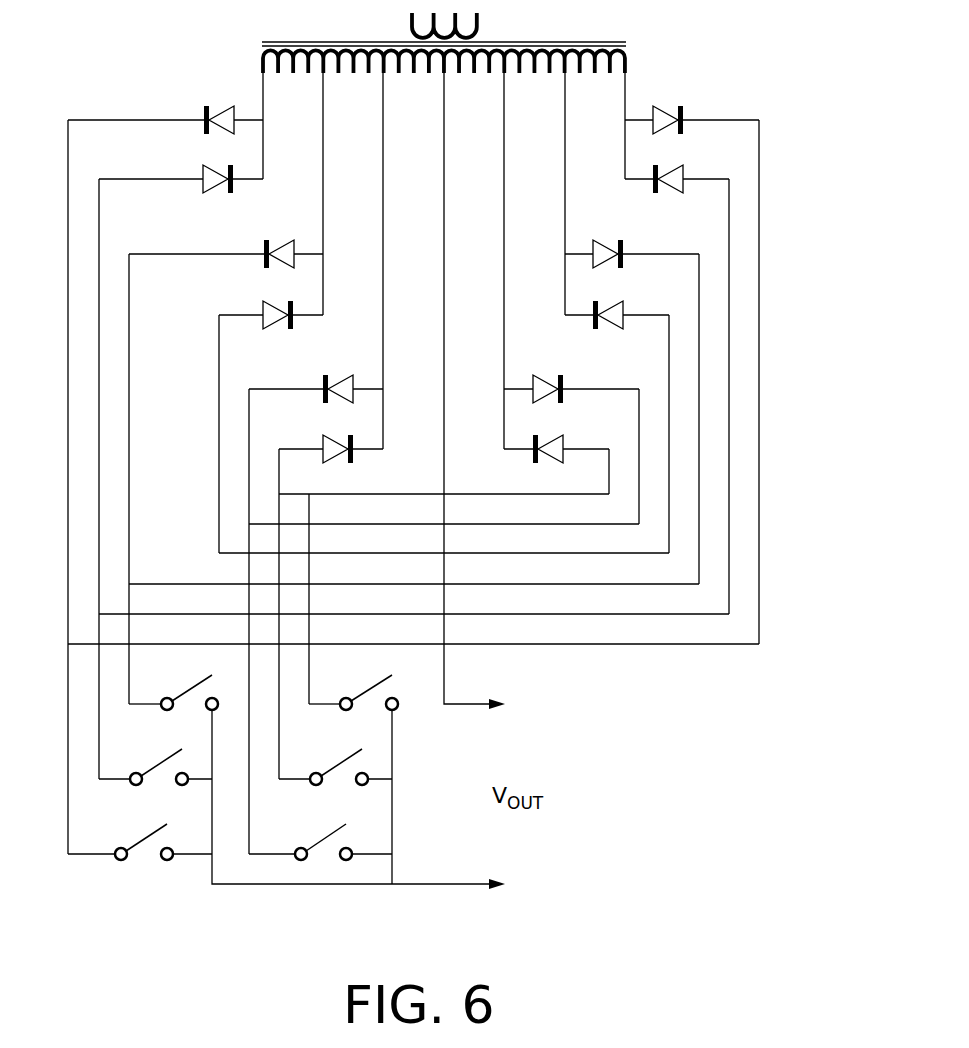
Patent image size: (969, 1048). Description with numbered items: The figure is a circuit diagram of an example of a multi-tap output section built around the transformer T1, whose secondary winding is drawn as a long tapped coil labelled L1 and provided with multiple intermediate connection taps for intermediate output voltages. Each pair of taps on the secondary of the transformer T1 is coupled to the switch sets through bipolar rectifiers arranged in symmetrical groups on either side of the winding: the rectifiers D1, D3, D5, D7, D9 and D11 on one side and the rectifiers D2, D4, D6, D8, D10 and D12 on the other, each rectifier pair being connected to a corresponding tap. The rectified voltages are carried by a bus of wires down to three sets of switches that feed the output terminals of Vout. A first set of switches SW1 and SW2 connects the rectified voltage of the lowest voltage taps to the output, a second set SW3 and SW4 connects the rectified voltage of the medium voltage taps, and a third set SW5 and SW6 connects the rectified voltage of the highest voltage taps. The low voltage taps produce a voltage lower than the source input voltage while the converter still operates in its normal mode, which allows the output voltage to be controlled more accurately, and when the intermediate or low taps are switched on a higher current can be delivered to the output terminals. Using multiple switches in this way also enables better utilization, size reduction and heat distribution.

The transformer T1 is at (439, 25).
The secondary winding / inductor L1 is at (444, 84).
The bipolar rectifier D1 is at (165, 111).
The bipolar rectifier D2 is at (692, 111).
The bipolar rectifier D3 is at (181, 171).
The bipolar rectifier D4 is at (677, 171).
The bipolar rectifier D5 is at (226, 245).
The bipolar rectifier D6 is at (632, 245).
The bipolar rectifier D7 is at (271, 305).
The bipolar rectifier D8 is at (617, 305).
The bipolar rectifier D9 is at (316, 380).
The bipolar rectifier D10 is at (571, 380).
The bipolar rectifier D11 is at (331, 440).
The bipolar rectifier D12 is at (556, 440).
The switch SW1 is at (353, 687).
The switch SW2 is at (335, 761).
The switch SW3 is at (320, 836).
The switch SW4 is at (173, 687).
The switch SW5 is at (155, 761).
The switch SW6 is at (140, 836).